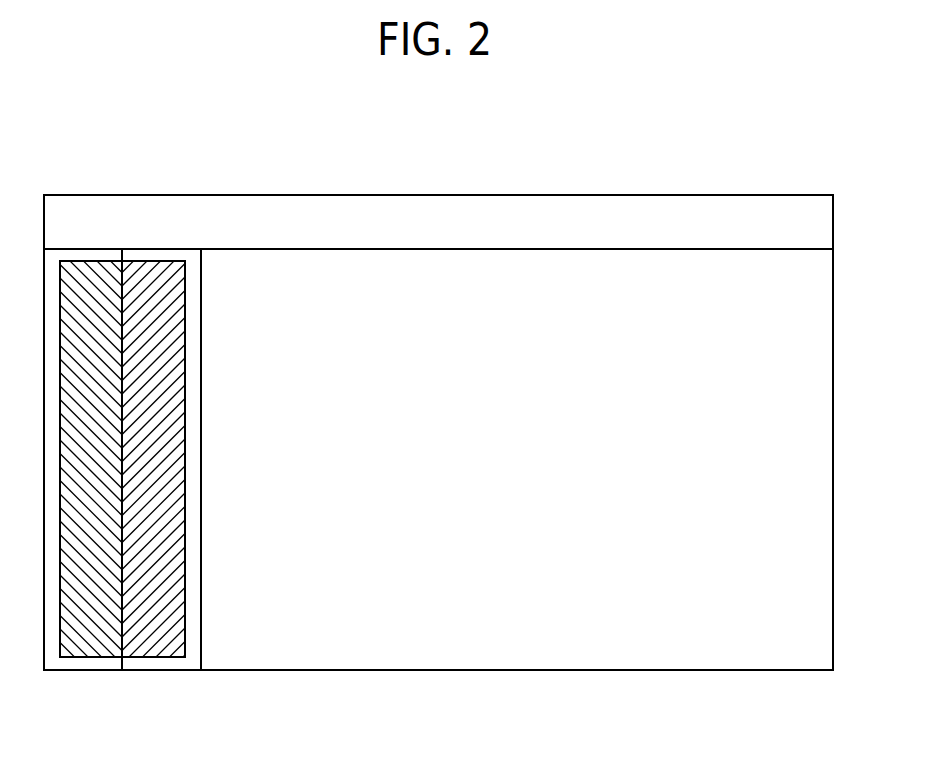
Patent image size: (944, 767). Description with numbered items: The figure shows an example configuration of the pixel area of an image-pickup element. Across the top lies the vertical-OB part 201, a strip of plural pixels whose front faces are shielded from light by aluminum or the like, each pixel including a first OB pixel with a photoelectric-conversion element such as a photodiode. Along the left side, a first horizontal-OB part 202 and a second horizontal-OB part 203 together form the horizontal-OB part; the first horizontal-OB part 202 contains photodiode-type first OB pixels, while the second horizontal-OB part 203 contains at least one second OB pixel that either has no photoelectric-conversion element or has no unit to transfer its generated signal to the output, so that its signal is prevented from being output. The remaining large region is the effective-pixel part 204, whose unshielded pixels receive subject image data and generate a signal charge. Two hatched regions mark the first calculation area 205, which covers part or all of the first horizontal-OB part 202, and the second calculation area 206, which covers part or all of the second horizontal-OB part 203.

The vertical-OB part 201 is at (825, 219).
The first horizontal-OB part 202 is at (193, 666).
The second horizontal-OB part 203 is at (61, 666).
The effective-pixel part 204 is at (825, 643).
The first calculation area 205 is at (150, 258).
The second calculation area 206 is at (90, 265).